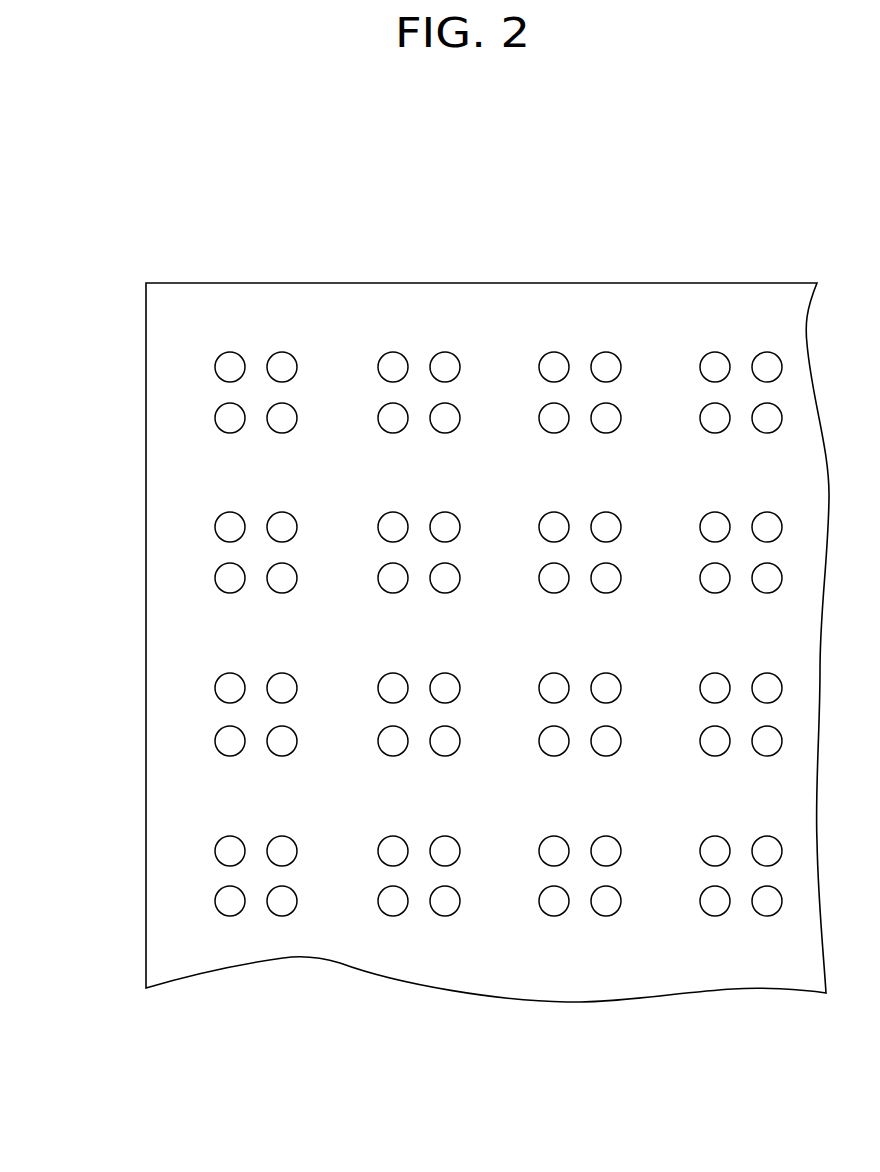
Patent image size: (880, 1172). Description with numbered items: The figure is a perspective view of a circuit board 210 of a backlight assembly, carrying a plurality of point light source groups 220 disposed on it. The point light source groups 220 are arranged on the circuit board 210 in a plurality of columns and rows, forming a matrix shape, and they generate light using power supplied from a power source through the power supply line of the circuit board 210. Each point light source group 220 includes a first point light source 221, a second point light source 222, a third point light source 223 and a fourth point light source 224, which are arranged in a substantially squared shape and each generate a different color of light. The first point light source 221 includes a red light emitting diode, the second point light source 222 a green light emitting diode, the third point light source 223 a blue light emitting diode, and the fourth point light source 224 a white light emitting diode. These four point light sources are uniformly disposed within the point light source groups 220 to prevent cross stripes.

The circuit board 210 is at (528, 300).
The point light source group 220 is at (257, 340).
The first point light source 221 is at (228, 352).
The second point light source 222 is at (290, 354).
The third point light source 223 is at (277, 432).
The fourth point light source 224 is at (215, 420).